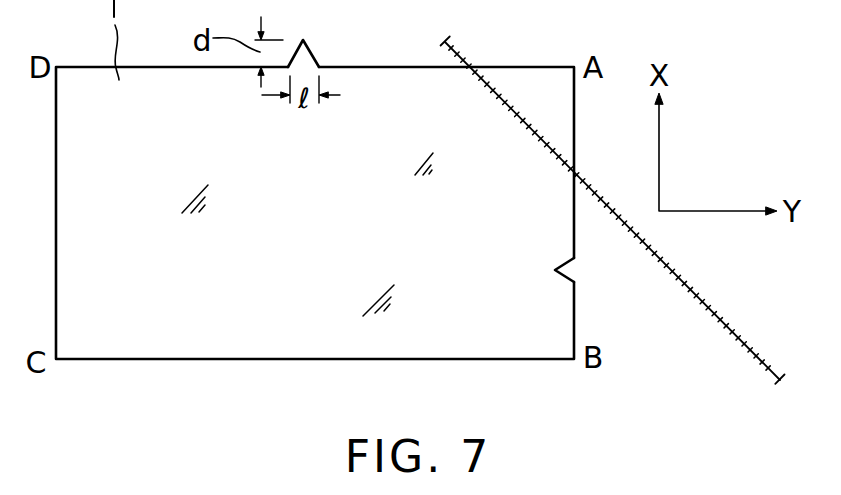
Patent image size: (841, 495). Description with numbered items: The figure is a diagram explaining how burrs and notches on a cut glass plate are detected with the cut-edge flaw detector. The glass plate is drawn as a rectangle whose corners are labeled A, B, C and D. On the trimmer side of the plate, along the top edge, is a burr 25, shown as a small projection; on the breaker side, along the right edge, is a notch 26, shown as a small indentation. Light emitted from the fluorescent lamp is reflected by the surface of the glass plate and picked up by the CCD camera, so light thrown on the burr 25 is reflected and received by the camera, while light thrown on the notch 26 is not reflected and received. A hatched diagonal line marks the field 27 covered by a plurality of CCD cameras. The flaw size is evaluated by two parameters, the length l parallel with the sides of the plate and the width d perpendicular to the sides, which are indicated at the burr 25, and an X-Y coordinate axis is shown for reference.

The burr 25 is at (312, 52).
The notch 26 is at (568, 268).
The field covered by a plurality of CCD cameras 27 is at (509, 100).